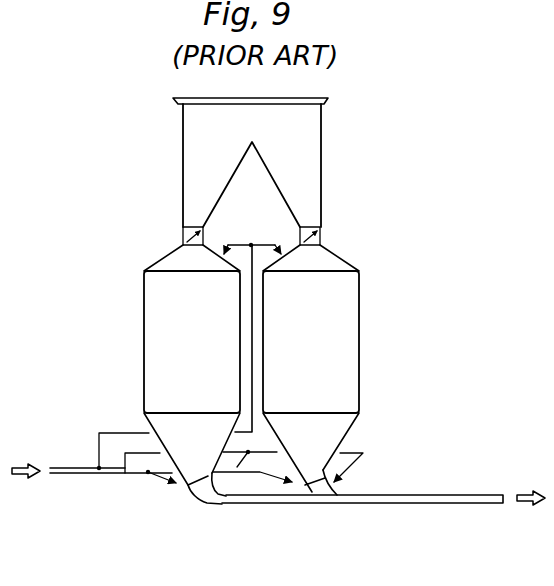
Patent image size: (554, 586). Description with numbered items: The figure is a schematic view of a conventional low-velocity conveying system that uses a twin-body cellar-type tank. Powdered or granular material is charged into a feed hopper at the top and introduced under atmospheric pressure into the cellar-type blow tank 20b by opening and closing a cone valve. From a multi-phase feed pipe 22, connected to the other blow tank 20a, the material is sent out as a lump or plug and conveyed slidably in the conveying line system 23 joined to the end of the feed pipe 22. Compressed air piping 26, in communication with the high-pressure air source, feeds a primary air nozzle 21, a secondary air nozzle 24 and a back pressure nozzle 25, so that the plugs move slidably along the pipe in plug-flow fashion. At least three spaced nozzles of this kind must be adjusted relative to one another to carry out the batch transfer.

The blow tank 20a is at (145, 314).
The cellar-type blow tank 20b is at (359, 312).
The primary air nozzle 21 is at (160, 480).
The multi-phase feed pipe 22 is at (207, 505).
The conveying line system 23 is at (298, 504).
The secondary air nozzle 24 is at (220, 484).
The back pressure nozzle 25 is at (113, 433).
The compressed air piping 26 is at (67, 477).